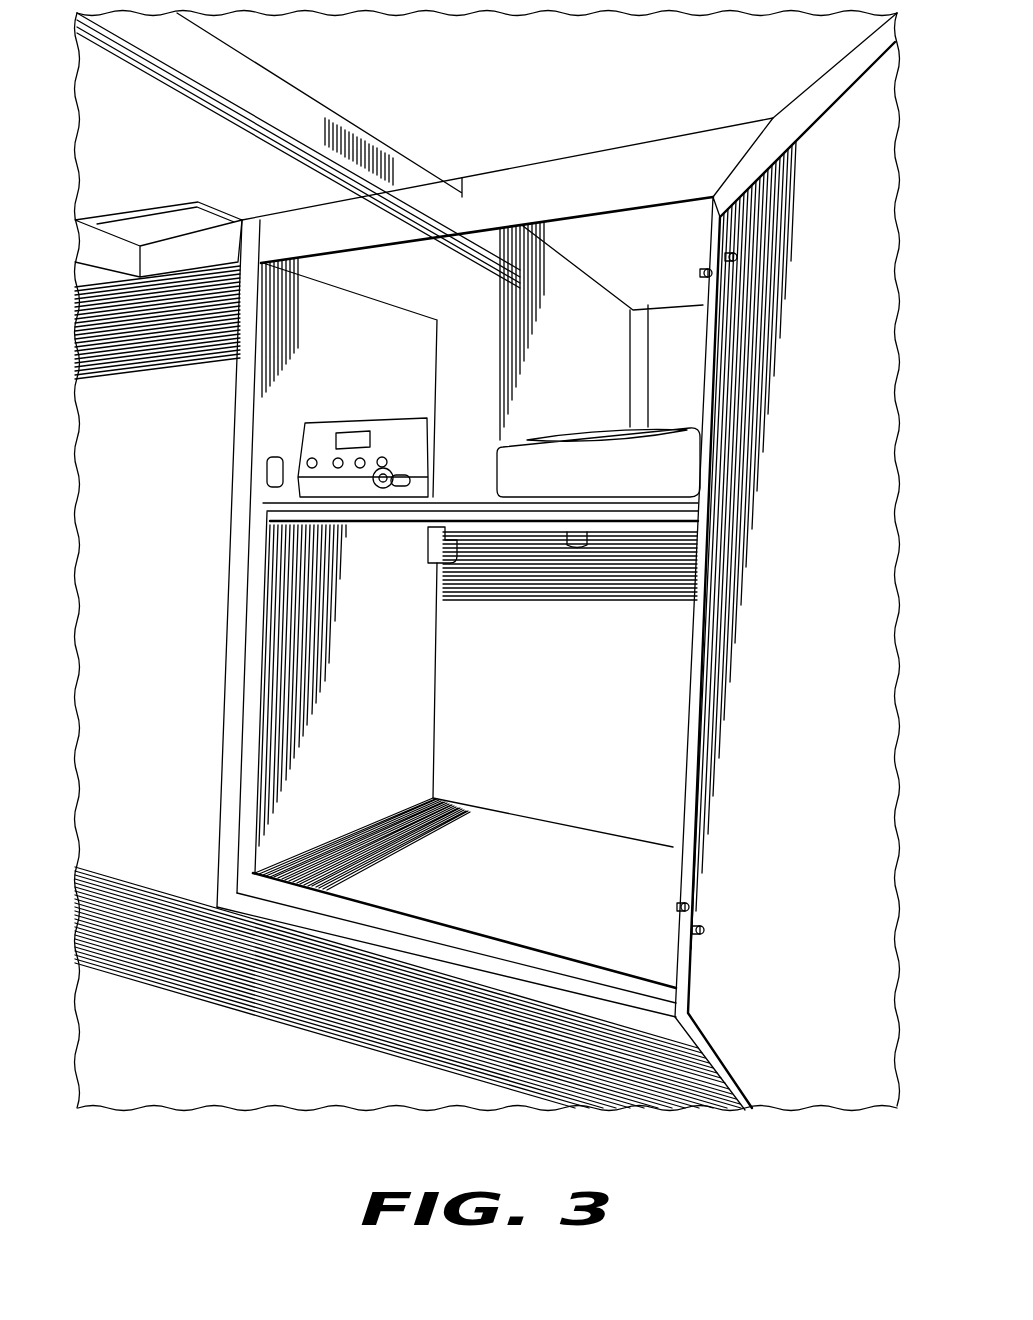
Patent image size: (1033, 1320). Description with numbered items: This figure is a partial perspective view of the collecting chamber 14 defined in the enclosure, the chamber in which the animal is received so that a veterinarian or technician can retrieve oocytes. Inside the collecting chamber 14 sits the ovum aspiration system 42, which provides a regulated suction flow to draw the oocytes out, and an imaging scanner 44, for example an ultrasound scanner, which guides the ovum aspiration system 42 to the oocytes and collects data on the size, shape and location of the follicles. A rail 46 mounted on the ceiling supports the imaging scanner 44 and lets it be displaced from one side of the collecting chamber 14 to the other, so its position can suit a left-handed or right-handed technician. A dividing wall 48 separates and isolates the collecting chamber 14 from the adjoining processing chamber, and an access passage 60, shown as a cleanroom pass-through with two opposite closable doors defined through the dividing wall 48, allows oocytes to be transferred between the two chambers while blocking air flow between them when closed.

The collecting chamber 14 is at (197, 999).
The ovum aspiration system 42 is at (310, 447).
The imaging scanner 44 is at (665, 462).
The rail 46 is at (157, 63).
The dividing wall 48 is at (152, 822).
The access passage 60 is at (652, 750).